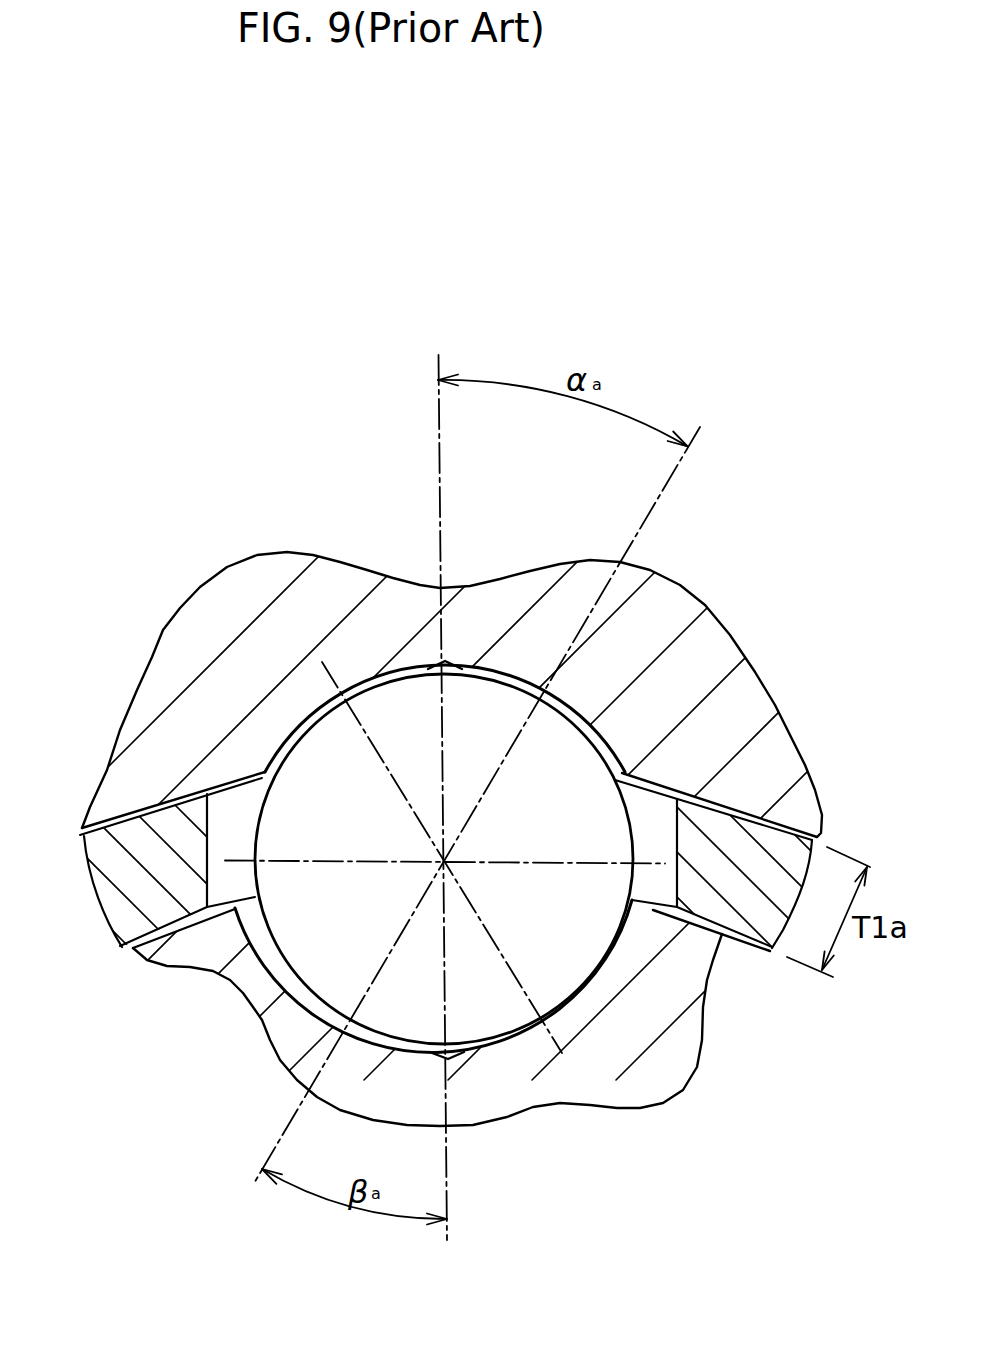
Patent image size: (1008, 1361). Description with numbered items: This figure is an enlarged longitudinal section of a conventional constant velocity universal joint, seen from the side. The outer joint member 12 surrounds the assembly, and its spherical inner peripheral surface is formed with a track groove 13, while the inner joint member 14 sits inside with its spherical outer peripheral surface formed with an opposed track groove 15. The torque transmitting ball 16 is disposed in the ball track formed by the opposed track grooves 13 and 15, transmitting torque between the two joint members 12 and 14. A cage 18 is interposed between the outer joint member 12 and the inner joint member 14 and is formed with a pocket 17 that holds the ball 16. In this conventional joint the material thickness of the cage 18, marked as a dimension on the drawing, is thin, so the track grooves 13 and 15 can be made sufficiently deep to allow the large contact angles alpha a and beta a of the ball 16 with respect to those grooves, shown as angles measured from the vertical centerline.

The outer joint member 12 is at (290, 623).
The track groove 13 is at (418, 675).
The inner joint member 14 is at (642, 1032).
The track groove 15 is at (460, 1055).
The torque transmitting ball 16 is at (330, 782).
The pocket 17 is at (676, 827).
The cage 18 is at (737, 847).